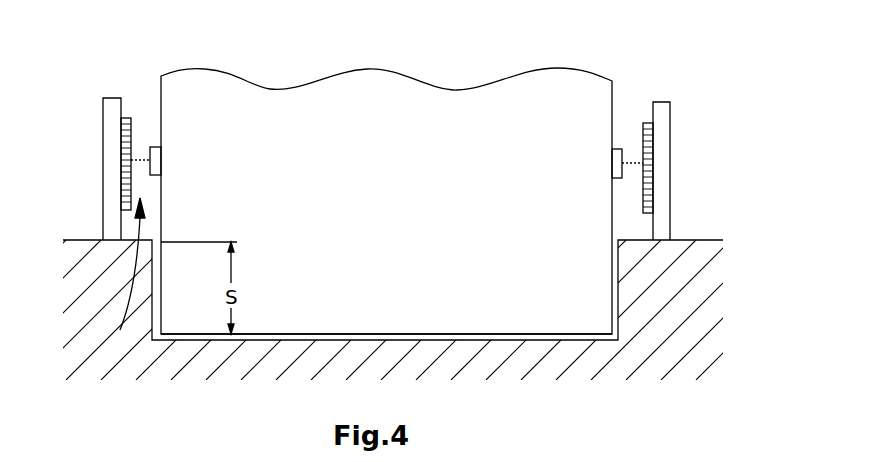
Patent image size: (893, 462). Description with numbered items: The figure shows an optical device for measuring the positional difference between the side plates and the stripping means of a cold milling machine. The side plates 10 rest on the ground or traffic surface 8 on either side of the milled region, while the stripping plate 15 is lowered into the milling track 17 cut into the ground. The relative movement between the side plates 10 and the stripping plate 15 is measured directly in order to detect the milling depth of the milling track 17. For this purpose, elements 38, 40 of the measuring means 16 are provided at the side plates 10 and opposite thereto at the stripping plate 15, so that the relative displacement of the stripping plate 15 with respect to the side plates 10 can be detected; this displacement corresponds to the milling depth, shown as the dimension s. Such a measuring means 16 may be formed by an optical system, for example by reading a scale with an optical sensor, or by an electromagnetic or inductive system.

The ground or traffic surface 8 is at (703, 240).
The side plates 10 is at (112, 123).
The stripping plate 15 is at (394, 309).
The measuring means 16 is at (120, 330).
The milling track 17 is at (480, 342).
The element of the measuring means 38 is at (132, 118).
The element of the measuring means 40 is at (155, 146).